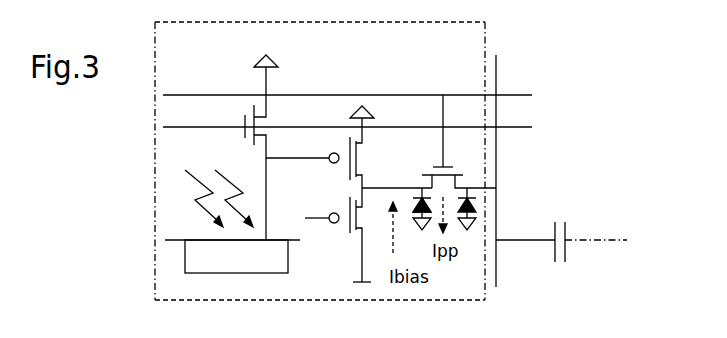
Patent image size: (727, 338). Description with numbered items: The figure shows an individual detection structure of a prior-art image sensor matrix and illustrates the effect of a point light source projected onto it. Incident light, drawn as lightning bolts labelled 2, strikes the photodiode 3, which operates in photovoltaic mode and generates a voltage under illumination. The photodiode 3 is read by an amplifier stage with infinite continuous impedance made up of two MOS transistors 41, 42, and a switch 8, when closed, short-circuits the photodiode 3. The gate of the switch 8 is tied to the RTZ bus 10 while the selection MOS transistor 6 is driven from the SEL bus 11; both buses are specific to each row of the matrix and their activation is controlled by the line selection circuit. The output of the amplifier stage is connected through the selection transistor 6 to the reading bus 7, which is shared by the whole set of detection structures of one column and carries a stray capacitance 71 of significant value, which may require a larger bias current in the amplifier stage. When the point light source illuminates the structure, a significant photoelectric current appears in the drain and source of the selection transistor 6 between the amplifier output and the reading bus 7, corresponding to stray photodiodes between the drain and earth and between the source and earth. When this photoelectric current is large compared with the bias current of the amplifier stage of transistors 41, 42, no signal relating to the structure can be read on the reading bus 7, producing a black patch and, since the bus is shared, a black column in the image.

The incident photons 2 is at (202, 186).
The photodiode 3 is at (185, 254).
The selection MOS transistor 6 is at (460, 173).
The reading bus 7 is at (497, 220).
The switch 8 is at (253, 110).
The RTZ bus 10 is at (173, 132).
The SEL bus 11 is at (515, 92).
The MOS transistor 41 is at (357, 162).
The MOS transistor 42 is at (352, 233).
The stray capacitance 71 is at (567, 230).